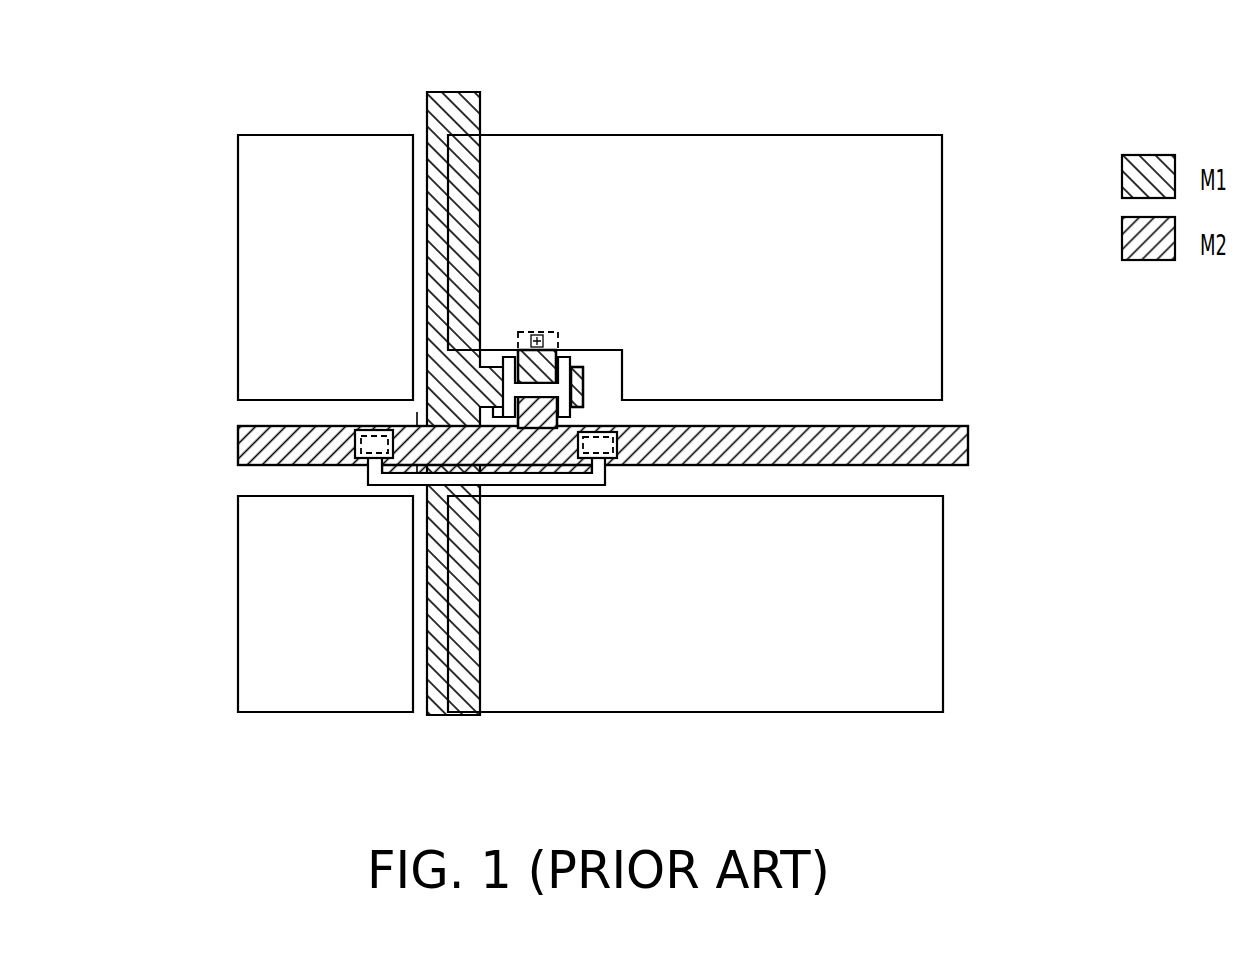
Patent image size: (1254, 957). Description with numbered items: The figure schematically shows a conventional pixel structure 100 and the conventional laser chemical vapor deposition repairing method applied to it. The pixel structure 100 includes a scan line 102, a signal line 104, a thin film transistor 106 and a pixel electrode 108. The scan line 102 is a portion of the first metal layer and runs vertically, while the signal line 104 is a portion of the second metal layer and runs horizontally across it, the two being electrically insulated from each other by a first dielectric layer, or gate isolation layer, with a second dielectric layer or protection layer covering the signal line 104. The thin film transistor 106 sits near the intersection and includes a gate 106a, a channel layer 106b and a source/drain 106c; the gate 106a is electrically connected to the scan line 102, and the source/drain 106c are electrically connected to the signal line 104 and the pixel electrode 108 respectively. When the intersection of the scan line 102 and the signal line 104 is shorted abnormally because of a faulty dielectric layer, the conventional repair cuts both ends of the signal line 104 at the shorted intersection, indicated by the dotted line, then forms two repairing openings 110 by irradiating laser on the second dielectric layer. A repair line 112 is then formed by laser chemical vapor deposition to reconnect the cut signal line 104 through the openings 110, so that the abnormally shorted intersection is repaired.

The pixel structure 100 is at (880, 792).
The scan line 102 is at (460, 103).
The signal line 104 is at (970, 442).
The thin film transistor 106 is at (722, 218).
The gate 106a is at (583, 385).
The channel layer 106b is at (563, 365).
The source/drain 106c is at (558, 338).
The pixel electrode 108 is at (907, 147).
The repairing opening 110 is at (353, 428).
The repair line 112 is at (548, 486).